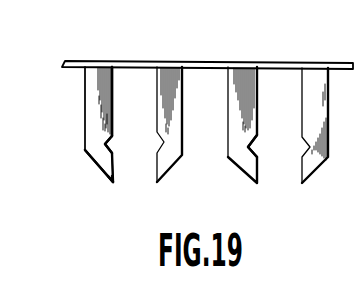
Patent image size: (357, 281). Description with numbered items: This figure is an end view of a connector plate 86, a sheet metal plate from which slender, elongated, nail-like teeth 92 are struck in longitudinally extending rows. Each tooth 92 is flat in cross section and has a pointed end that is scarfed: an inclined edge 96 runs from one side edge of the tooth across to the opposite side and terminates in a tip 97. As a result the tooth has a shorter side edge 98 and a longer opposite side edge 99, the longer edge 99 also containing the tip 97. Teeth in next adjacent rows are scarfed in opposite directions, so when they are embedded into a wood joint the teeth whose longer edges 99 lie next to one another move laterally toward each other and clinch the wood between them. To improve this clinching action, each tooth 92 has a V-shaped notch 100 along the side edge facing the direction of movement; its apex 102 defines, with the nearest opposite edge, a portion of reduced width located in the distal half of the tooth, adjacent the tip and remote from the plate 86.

The connector plate 86 is at (139, 61).
The teeth 92 is at (95, 83).
The inclined edge 96 is at (97, 163).
The tip 97 is at (113, 183).
The side edge 98 is at (85, 127).
The side edge 99 is at (113, 103).
The notch 100 is at (110, 145).
The apex 102 is at (258, 146).